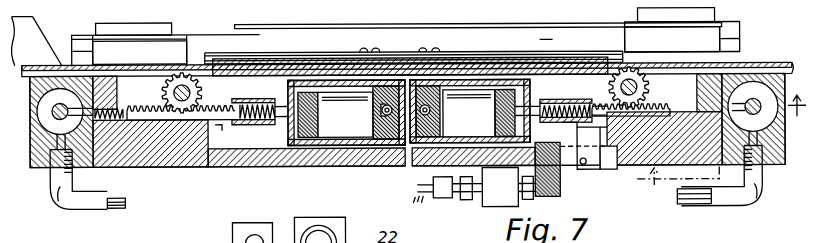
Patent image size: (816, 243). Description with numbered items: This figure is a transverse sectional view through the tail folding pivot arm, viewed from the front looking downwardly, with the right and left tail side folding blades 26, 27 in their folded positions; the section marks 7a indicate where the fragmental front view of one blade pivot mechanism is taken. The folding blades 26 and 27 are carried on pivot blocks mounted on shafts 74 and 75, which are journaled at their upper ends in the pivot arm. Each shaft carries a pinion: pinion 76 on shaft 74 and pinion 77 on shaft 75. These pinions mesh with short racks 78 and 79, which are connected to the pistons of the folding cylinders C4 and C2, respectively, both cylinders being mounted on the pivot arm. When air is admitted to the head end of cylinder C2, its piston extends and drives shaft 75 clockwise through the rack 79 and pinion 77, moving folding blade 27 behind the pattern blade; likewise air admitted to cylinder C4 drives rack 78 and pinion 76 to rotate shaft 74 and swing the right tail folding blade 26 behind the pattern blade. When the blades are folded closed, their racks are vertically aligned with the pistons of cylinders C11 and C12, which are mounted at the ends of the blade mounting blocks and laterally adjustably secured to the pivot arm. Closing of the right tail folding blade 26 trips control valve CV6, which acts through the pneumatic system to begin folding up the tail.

The left tail side folding blade 27 is at (221, 29).
The right tail side folding blade 26 is at (414, 52).
The shaft 75 is at (174, 78).
The shaft 74 is at (640, 68).
The pinion 76 is at (627, 72).
The pinion 77 is at (166, 99).
The rack 79 is at (204, 98).
The rack 78 is at (665, 106).
The folding cylinder C2 is at (346, 113).
The folding cylinder C4 is at (470, 111).
The control valve CV6 is at (486, 174).
The cylinder C12 is at (57, 121).
The cylinder C11 is at (763, 122).
The section line 7a is at (723, 151).